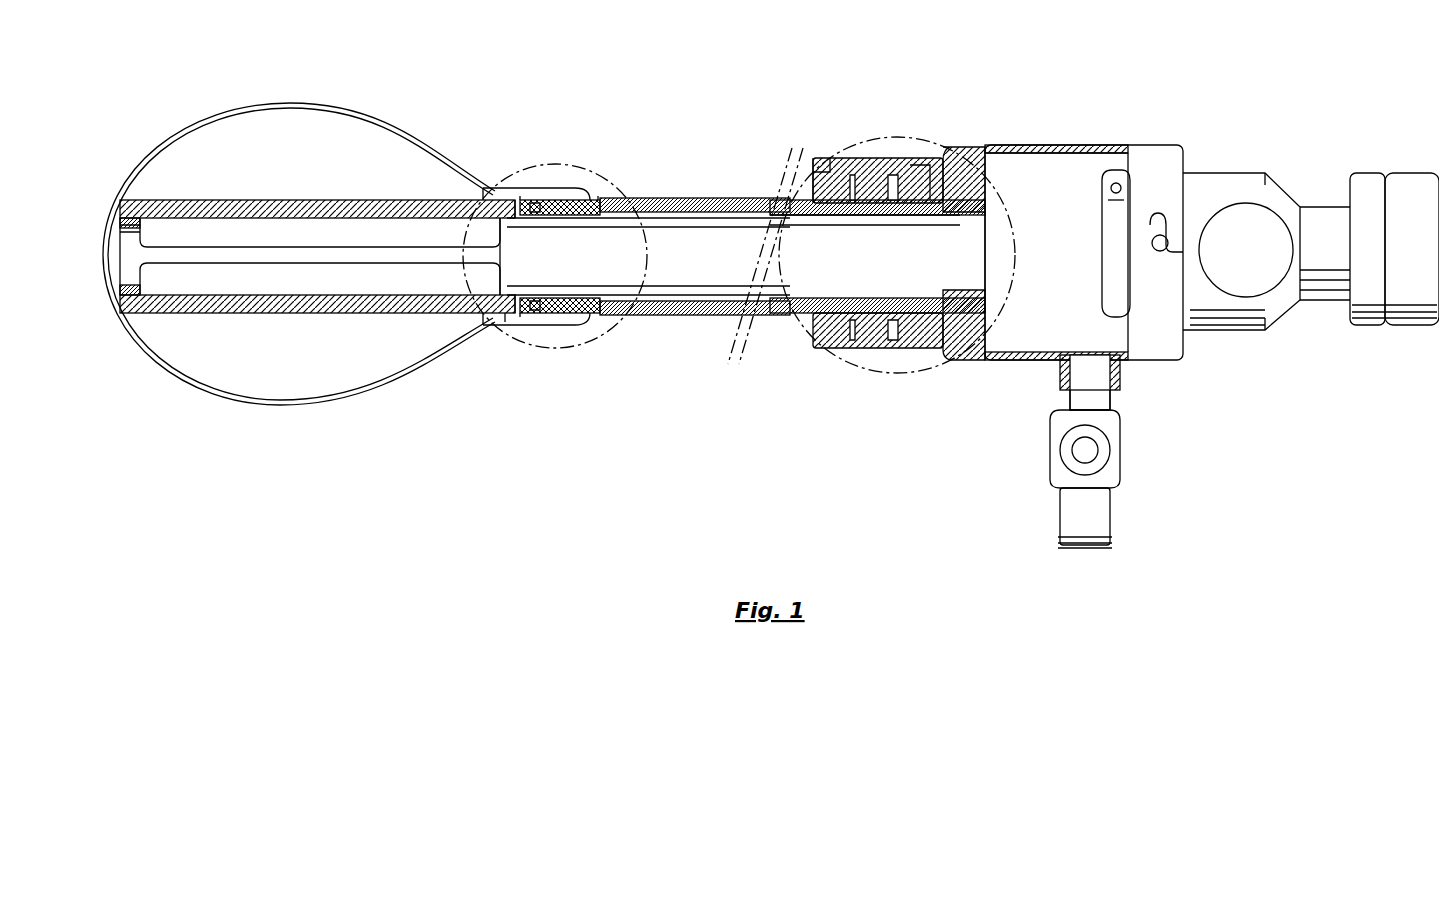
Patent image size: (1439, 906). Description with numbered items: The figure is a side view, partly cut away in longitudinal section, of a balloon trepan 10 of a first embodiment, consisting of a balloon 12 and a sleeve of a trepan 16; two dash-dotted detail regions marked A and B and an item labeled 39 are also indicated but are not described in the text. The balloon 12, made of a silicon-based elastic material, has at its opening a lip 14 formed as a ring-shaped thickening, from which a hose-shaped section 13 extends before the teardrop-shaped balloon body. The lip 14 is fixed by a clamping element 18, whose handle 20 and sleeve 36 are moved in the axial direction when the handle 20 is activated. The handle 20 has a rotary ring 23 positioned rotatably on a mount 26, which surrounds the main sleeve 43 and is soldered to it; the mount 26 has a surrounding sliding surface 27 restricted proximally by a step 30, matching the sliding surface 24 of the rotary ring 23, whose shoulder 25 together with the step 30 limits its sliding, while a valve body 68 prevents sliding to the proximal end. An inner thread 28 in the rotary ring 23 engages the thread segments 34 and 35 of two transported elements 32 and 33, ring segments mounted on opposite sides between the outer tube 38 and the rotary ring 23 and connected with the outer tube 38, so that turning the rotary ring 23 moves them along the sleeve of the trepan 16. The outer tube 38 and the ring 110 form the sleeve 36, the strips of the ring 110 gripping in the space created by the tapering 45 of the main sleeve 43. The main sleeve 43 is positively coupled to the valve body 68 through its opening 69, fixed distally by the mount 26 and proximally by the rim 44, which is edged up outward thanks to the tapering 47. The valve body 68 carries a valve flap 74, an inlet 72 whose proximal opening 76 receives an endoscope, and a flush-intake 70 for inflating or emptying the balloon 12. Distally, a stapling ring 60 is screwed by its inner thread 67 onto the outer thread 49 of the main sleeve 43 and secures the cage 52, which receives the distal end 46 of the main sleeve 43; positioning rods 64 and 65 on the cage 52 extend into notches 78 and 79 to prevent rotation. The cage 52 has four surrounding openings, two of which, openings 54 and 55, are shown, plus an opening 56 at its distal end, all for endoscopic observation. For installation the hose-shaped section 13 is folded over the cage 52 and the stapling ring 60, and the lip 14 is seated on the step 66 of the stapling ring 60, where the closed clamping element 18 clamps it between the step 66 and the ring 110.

The balloon trepan 10 is at (710, 90).
The balloon 12 is at (172, 142).
The hose-shaped section 13 is at (512, 190).
The lip 14 is at (590, 195).
The sleeve of the trepan 16 is at (765, 335).
The clamping element 18 is at (885, 170).
The handle 20 is at (855, 357).
The rotary ring 23 is at (963, 346).
The sliding surface 24 is at (898, 350).
The shoulder 25 is at (960, 165).
The mount 26 is at (920, 197).
The sliding surface 27 is at (922, 350).
The inner thread 28 is at (878, 350).
The step 30 is at (942, 328).
The transported element 32 is at (787, 208).
The transported element 33 is at (770, 328).
The thread segment 34 is at (830, 210).
The thread segment 35 is at (840, 342).
The sleeve 36 is at (683, 318).
The outer tube 38 is at (693, 312).
The tube wall 39 is at (656, 316).
The main sleeve 43 is at (755, 208).
The rim 44 is at (1020, 148).
The tapering 45 is at (690, 208).
The distal end 46 is at (534, 212).
The tapering 47 is at (992, 218).
The outer thread 49 is at (578, 302).
The cage 52 is at (378, 320).
The opening 54 is at (197, 288).
The opening 55 is at (233, 232).
The opening 56 is at (125, 248).
The stapling ring 60 is at (590, 204).
The positioning rod 64 is at (518, 302).
The positioning rod 65 is at (553, 210).
The step 66 is at (610, 316).
The inner thread 67 is at (575, 298).
The valve body 68 is at (1112, 147).
The opening 69 is at (995, 263).
The flush-intake 70 is at (1122, 450).
The inlet 72 is at (1300, 205).
The valve flap 74 is at (1120, 300).
The proximal opening 76 is at (1438, 172).
The notch 78 is at (505, 322).
The notch 79 is at (520, 205).
The ring 110 is at (598, 196).
The detail A is at (860, 137).
The detail B is at (640, 205).